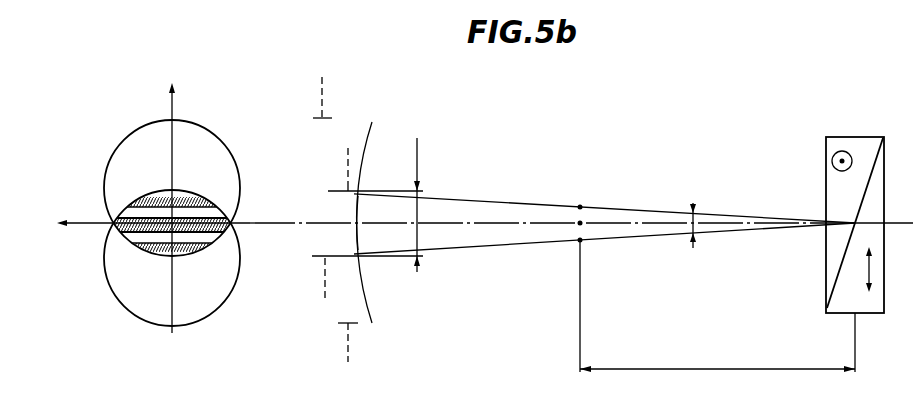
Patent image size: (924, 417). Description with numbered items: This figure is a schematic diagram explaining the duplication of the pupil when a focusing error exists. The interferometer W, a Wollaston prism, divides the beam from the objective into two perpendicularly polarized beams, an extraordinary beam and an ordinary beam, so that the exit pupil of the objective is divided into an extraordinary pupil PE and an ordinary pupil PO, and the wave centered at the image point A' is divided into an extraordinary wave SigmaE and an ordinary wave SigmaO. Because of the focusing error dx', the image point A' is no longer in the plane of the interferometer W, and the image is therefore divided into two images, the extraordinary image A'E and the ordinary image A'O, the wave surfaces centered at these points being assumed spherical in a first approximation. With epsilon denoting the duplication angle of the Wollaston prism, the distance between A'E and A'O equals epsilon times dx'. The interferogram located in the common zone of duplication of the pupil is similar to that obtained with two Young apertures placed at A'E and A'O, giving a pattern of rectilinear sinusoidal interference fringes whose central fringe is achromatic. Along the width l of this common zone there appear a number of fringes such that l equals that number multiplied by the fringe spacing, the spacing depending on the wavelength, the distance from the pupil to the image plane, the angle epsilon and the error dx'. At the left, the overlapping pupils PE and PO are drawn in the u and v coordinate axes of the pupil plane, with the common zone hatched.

The u coordinate axis u is at (171, 194).
The v coordinate axis v is at (153, 210).
The extraordinary pupil PE is at (312, 95).
The ordinary pupil PO is at (335, 346).
The extraordinary wave SigmaE is at (381, 184).
The ordinary wave SigmaO is at (381, 266).
The width of common duplication zone l is at (412, 205).
The extraordinary image A'E is at (583, 193).
The image point A' is at (591, 225).
The ordinary image A'O is at (594, 255).
The duplication angle epsilon is at (684, 230).
The interferometer W is at (855, 207).
The focusing error dx' is at (717, 307).